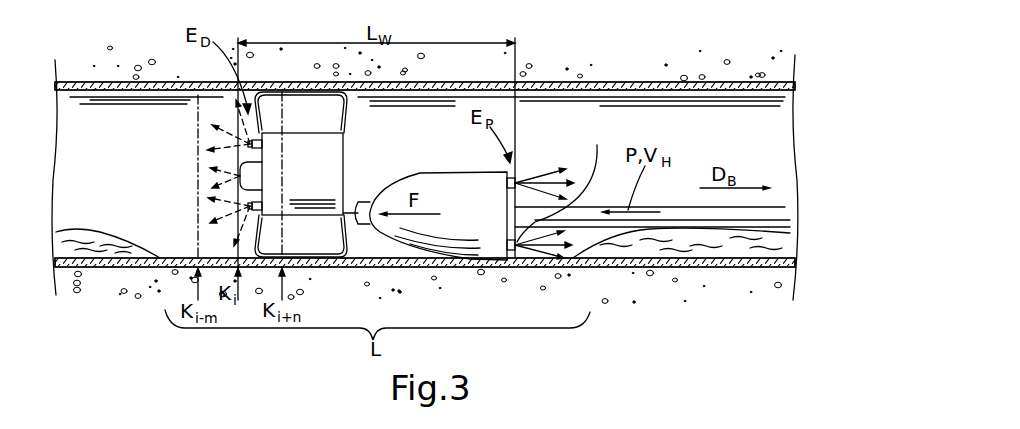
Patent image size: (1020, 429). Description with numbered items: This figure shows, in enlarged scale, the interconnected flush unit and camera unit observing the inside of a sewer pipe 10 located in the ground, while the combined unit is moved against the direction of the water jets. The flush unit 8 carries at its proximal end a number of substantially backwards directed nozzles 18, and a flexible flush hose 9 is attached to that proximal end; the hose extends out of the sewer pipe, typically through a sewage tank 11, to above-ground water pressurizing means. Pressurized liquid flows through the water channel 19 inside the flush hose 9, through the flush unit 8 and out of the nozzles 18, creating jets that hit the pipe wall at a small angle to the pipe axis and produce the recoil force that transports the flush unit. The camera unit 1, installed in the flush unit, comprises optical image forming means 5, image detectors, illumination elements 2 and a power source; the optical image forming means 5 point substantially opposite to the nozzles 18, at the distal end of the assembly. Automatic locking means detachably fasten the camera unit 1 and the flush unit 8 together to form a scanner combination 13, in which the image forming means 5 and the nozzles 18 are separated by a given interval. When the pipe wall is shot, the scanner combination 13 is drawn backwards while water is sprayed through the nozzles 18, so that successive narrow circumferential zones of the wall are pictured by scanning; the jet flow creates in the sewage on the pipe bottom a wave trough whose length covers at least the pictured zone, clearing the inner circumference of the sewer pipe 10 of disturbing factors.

The camera unit 1 is at (315, 183).
The illumination elements 2 is at (262, 206).
The optical image forming means 5 is at (245, 173).
The flush unit 8 is at (482, 219).
The flush hose 9 is at (772, 214).
The sewer pipe 10 is at (708, 133).
The sewage tank 11 is at (510, 218).
The scanner combination 13 is at (366, 172).
The nozzles 18 is at (517, 178).
The water channel 19 is at (762, 214).